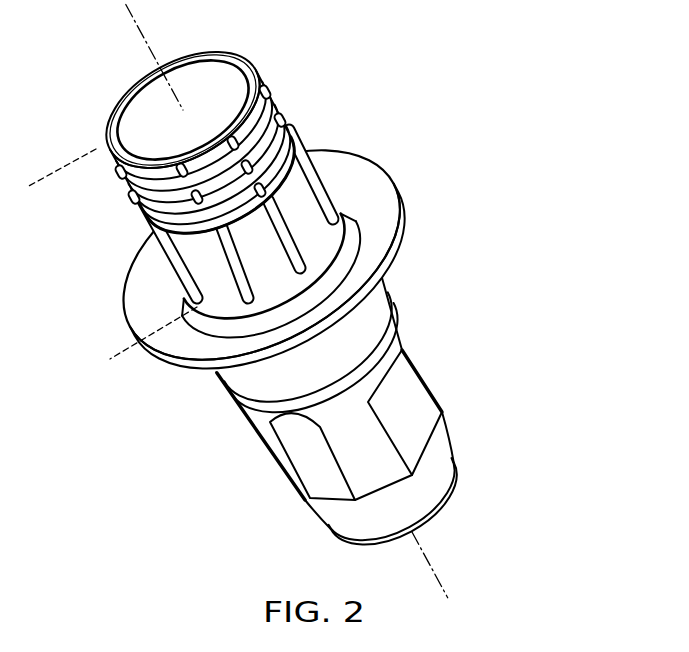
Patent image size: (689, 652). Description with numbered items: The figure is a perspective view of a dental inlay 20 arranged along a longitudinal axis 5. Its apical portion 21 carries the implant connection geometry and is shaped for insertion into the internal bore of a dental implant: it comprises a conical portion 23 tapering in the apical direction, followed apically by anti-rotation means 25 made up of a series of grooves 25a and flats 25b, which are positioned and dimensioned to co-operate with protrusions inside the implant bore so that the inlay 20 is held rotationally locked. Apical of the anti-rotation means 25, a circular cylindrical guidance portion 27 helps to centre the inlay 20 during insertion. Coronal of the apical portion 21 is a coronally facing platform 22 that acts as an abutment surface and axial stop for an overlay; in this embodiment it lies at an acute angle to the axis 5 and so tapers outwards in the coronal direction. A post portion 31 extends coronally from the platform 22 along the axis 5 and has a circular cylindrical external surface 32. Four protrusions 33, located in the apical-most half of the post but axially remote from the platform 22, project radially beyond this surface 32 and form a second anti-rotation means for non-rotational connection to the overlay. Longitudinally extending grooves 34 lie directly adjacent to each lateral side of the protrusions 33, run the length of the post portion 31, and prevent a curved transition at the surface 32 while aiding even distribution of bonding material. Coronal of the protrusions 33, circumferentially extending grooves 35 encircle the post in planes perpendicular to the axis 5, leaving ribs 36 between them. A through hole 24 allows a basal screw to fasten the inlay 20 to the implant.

The longitudinal axis 5 is at (128, 18).
The inlay 20 is at (499, 148).
The apical portion 21 is at (396, 276).
The platform 22 is at (387, 198).
The conical portion 23 is at (242, 385).
The cap opening 24 is at (205, 70).
The anti-rotation means 25 is at (239, 409).
The grooves 25a is at (306, 453).
The flats 25b is at (431, 426).
The circular cylindrical guidance portion 27 is at (335, 521).
The post portion 31 is at (27, 187).
The circular cylindrical external surface 32 is at (253, 63).
The protrusions 33 is at (325, 194).
The longitudinally extending grooves 34 is at (283, 241).
The circumferentially extending grooves 35 is at (266, 90).
The ribs 36 is at (143, 196).